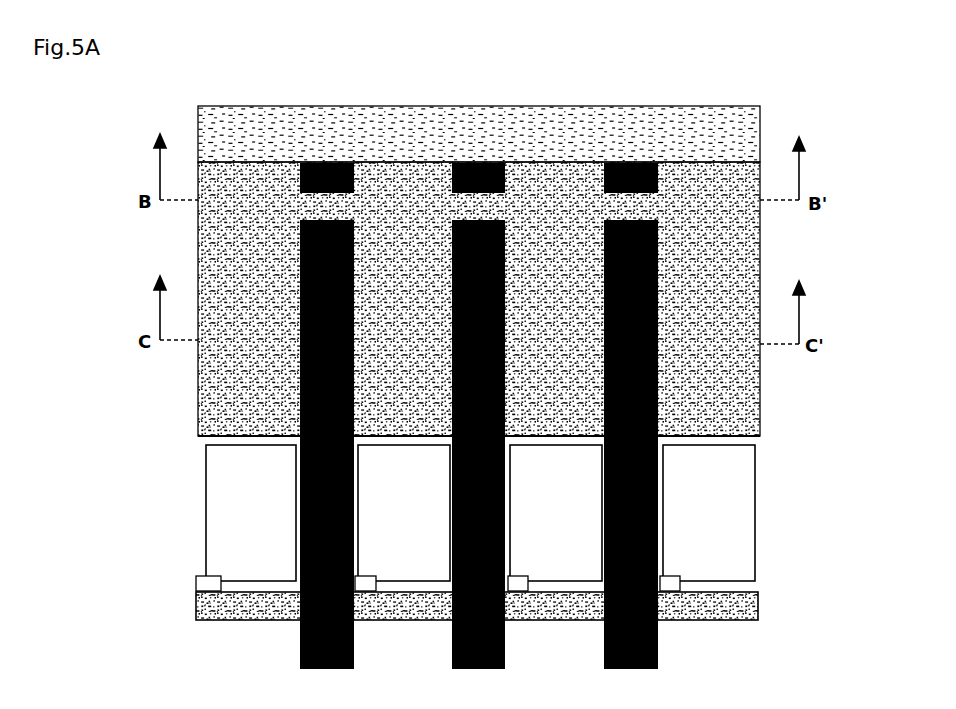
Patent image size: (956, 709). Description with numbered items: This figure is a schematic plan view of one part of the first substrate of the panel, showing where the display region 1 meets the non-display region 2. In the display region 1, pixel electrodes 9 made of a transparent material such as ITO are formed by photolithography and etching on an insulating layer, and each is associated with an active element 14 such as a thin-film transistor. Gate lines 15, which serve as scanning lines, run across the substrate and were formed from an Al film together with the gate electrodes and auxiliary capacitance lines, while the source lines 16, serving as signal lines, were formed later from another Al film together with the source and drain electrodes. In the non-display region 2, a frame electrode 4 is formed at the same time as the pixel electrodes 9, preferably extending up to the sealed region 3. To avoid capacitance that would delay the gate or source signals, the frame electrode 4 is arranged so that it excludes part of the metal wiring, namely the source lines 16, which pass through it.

The display region 1 is at (445, 573).
The non-display region 2 is at (453, 275).
The sealed region 3 is at (728, 119).
The frame electrode 4 is at (728, 373).
The pixel electrodes 9 is at (730, 520).
The active elements 14 is at (507, 575).
The gate lines 15 is at (750, 597).
The source lines 16 is at (710, 423).